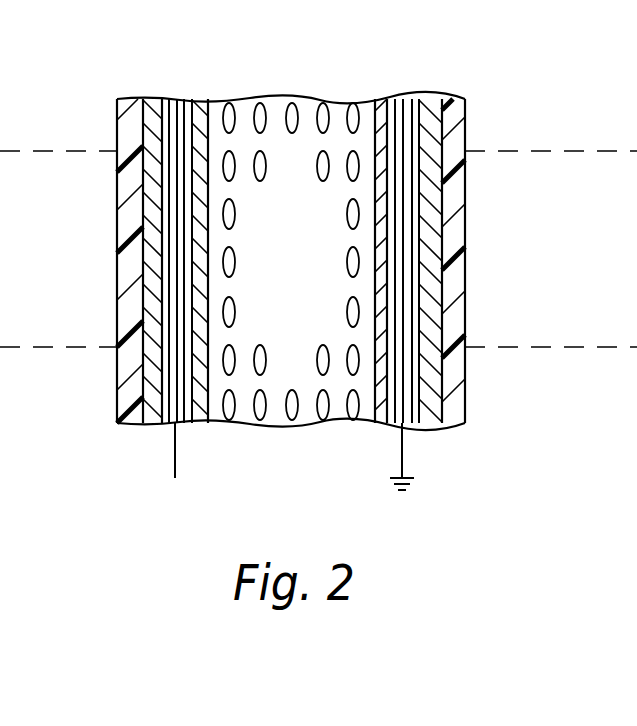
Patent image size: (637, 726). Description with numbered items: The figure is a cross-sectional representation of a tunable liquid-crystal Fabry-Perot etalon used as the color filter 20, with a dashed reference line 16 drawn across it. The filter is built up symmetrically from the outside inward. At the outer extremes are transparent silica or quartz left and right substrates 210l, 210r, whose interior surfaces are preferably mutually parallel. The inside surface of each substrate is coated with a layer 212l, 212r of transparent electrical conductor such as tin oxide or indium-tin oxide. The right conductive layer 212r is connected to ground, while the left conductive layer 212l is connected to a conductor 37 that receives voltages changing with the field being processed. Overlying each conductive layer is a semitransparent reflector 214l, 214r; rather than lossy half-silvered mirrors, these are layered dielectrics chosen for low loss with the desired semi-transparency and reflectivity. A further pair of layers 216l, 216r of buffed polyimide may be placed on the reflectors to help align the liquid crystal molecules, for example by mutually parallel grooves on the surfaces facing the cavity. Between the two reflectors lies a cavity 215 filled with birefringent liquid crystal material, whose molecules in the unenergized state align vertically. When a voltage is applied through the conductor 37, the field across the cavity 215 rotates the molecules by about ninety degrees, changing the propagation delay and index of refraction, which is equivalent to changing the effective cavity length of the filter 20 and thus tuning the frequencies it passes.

The plane/axis line 16 is at (60, 150).
The color filter 20 is at (285, 520).
The conductor 37 is at (175, 450).
The left substrate 210l is at (120, 316).
The left conductive layer 212l is at (150, 255).
The left semitransparent reflector 214l is at (193, 87).
The left buffed polyimide layer 216l is at (236, 83).
The cavity 215 is at (281, 423).
The right buffed polyimide layer 216r is at (375, 99).
The right semitransparent reflector 214r is at (418, 99).
The right conductive layer 212r is at (445, 255).
The right substrate 210r is at (455, 312).